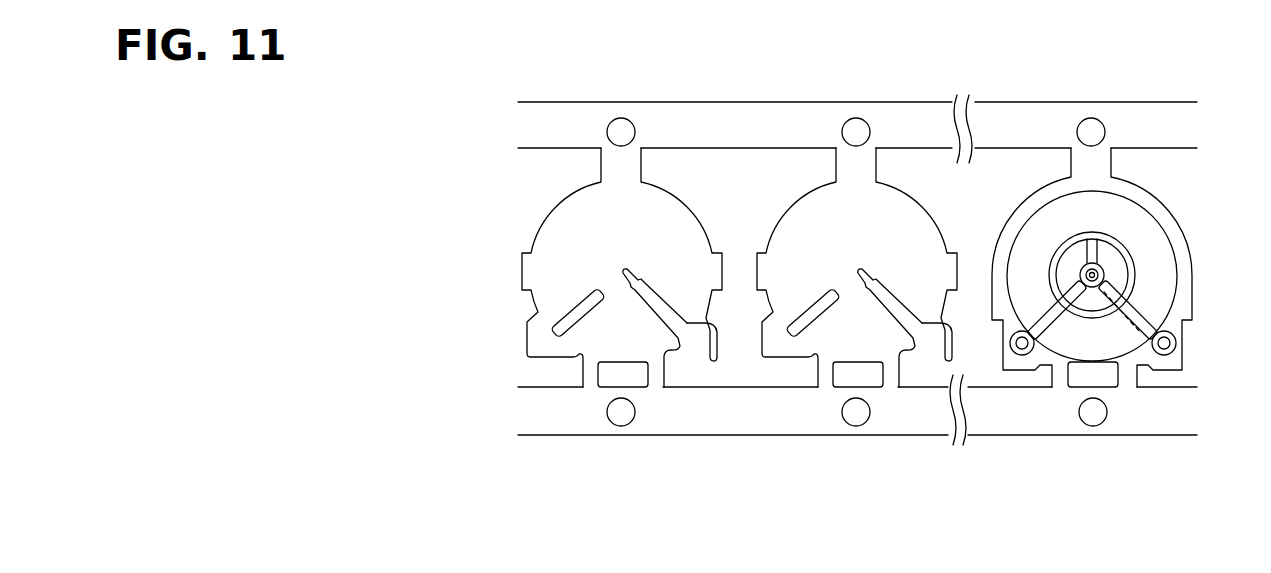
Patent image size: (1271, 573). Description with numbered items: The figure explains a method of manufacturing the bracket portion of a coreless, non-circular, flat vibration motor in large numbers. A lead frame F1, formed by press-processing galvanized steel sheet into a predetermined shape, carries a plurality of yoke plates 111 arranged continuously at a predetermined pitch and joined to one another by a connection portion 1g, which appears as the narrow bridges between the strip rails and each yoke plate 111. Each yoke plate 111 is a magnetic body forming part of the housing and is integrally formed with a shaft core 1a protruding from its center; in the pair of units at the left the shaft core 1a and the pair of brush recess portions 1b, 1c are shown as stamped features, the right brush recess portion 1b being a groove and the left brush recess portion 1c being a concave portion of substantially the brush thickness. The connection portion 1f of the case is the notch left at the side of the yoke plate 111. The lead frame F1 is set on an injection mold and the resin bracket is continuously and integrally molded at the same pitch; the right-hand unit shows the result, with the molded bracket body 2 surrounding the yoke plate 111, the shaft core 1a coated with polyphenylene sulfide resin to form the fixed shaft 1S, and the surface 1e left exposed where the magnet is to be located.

The lead frame F1 is at (700, 173).
The yoke plate 111 is at (563, 228).
The connection portion of case 1f is at (520, 272).
The shaft core 1a is at (863, 265).
The right brush recess portion 1b is at (947, 293).
The left brush recess portion 1c is at (572, 315).
The connection portion 1g is at (852, 162).
The housing 2 is at (1117, 187).
The surface where magnet is located 1e is at (1155, 293).
The fixed shaft 1S is at (1103, 270).